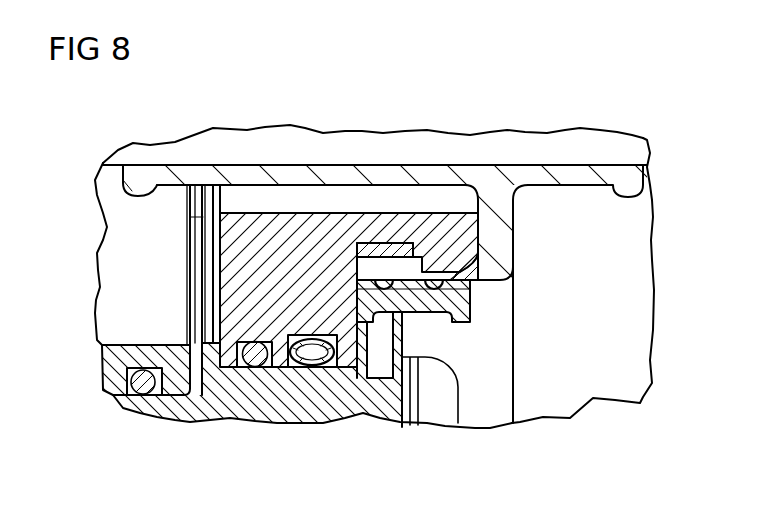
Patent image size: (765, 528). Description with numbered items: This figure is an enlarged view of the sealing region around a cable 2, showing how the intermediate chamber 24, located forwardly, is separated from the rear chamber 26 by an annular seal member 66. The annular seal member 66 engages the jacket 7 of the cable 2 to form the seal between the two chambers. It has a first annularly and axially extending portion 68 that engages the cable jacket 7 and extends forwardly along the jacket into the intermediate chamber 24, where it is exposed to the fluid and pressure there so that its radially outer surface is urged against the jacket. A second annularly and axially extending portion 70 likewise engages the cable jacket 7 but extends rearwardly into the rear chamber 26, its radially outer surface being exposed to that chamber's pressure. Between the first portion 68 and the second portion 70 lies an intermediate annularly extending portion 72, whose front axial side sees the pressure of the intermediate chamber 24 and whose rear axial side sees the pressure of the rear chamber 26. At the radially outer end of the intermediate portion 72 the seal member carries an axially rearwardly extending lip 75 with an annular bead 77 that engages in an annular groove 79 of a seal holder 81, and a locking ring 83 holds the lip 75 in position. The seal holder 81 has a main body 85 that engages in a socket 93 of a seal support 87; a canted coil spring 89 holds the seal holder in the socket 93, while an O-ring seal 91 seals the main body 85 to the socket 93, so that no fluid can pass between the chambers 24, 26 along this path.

The cable 2 is at (517, 126).
The cable jacket 7 is at (572, 143).
The intermediate chamber 24 is at (642, 330).
The rear chamber 26 is at (105, 266).
The annular seal member 66 is at (348, 164).
The first annularly and axially extending portion 68 is at (583, 177).
The second annularly and axially extending portion 70 is at (180, 178).
The intermediate annularly extending portion 72 is at (500, 243).
The lip 75 is at (448, 267).
The annular bead 77 is at (387, 243).
The annular groove 79 is at (419, 308).
The seal holder 81 is at (257, 200).
The locking ring 83 is at (418, 260).
The main body 85 is at (310, 218).
The seal support 87 is at (213, 413).
The canted coil spring 89 is at (312, 357).
The O-ring seal 91 is at (255, 367).
The socket 93 is at (218, 342).